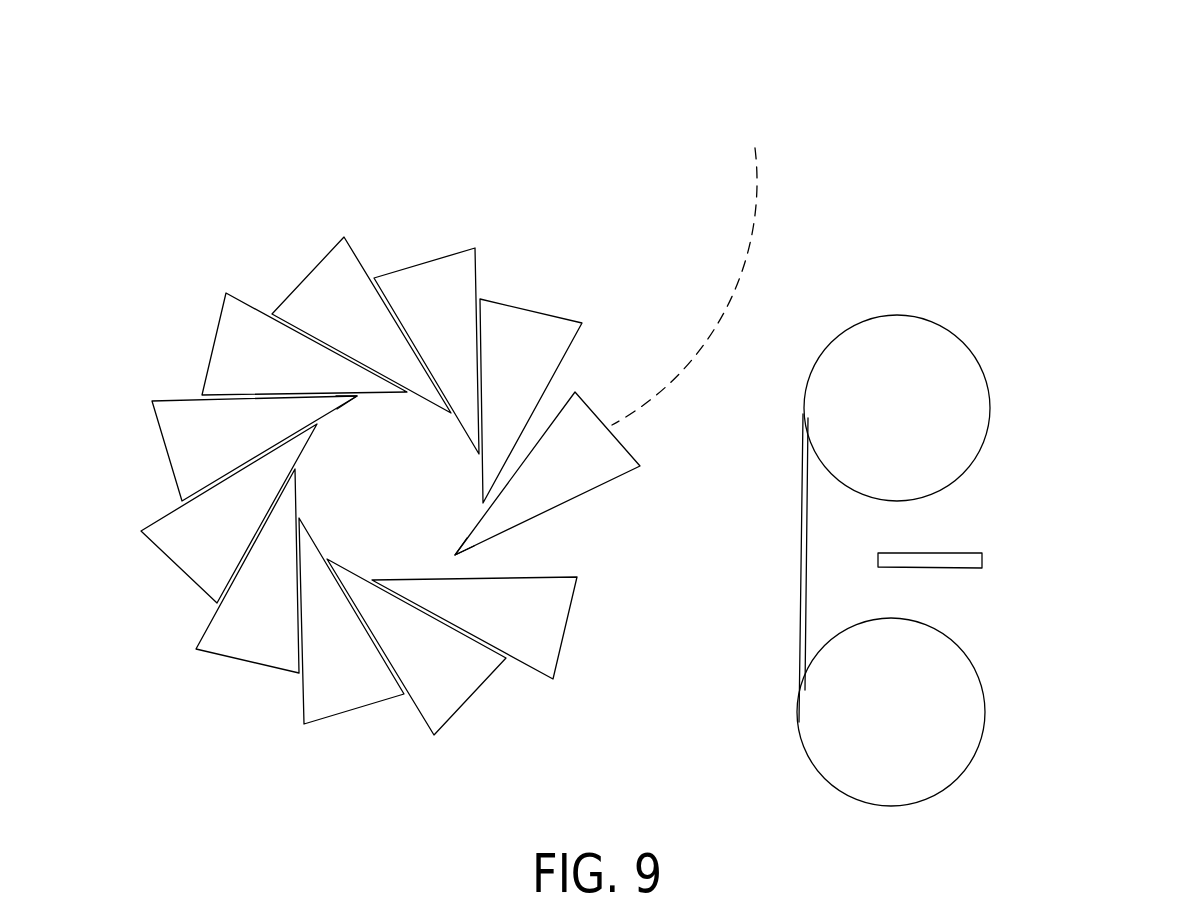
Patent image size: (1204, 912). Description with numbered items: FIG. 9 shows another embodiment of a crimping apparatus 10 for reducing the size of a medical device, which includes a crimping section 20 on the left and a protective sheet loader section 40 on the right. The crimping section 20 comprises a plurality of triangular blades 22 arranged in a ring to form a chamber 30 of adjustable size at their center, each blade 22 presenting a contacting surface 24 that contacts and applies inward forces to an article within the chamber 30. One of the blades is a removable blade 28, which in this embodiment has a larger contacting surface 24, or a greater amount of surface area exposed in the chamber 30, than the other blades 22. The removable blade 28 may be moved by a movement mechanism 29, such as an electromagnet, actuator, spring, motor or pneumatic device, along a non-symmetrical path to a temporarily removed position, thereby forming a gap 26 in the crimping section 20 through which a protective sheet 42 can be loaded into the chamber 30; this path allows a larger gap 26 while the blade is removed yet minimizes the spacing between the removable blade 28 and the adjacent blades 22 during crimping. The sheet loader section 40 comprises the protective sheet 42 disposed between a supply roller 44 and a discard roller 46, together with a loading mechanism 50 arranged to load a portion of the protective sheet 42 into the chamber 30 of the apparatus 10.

The crimping apparatus 10 is at (678, 130).
The crimping section 20 is at (136, 288).
The blade 22 is at (172, 455).
The contacting surface 24 is at (344, 398).
The gap 26 is at (516, 555).
The removable blade 28 is at (627, 452).
The movement mechanism 29 is at (738, 262).
The chamber 30 is at (310, 490).
The protective sheet loader section 40 is at (1092, 660).
The protective sheet 42 is at (802, 651).
The supply roller 44 is at (970, 762).
The discard roller 46 is at (952, 332).
The loading mechanism 50 is at (983, 561).